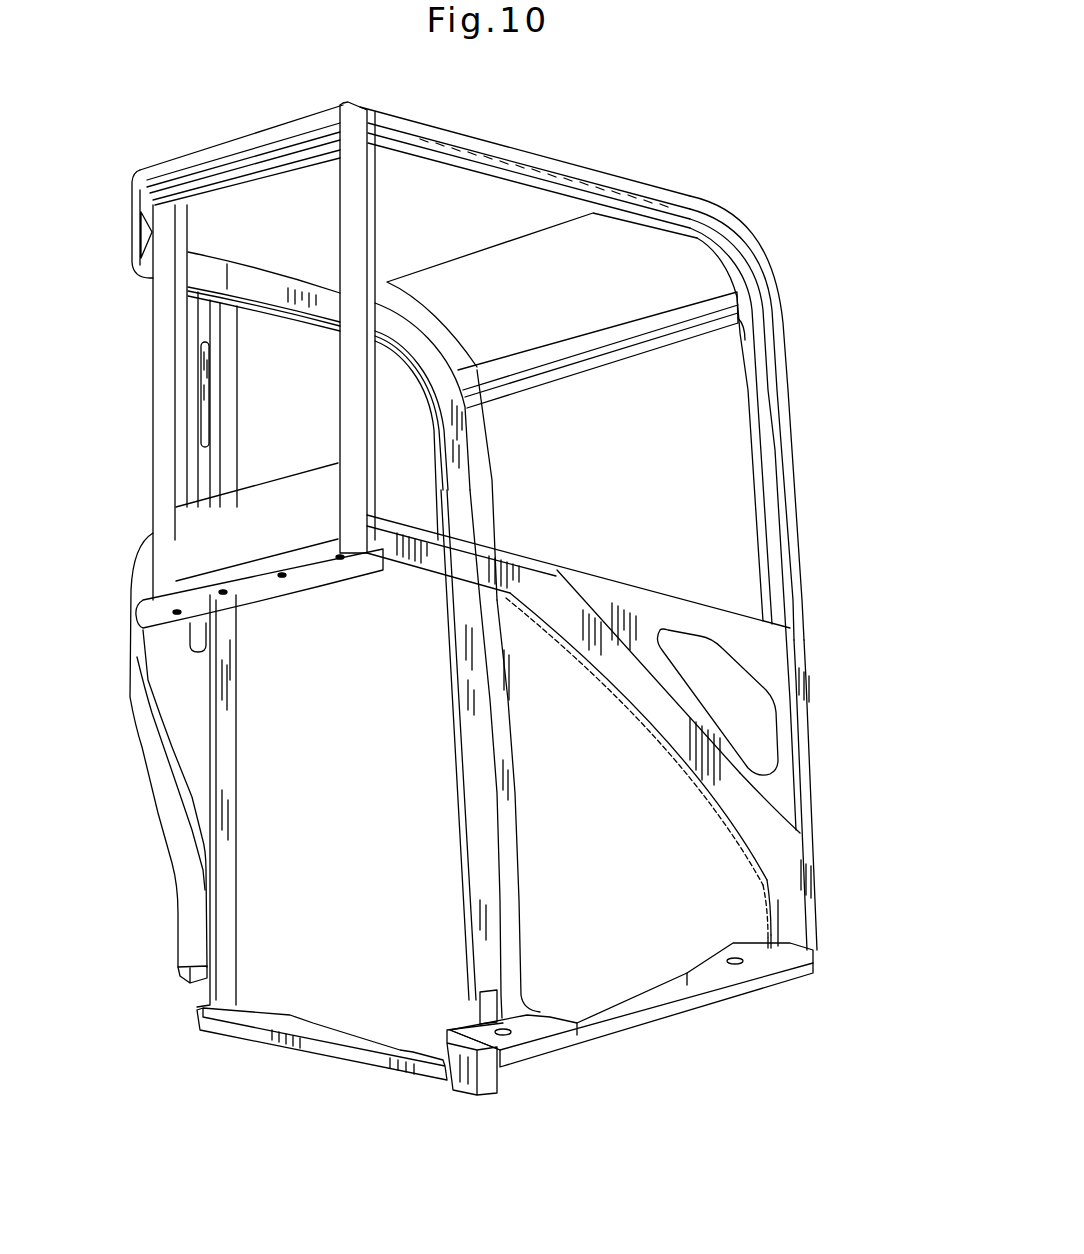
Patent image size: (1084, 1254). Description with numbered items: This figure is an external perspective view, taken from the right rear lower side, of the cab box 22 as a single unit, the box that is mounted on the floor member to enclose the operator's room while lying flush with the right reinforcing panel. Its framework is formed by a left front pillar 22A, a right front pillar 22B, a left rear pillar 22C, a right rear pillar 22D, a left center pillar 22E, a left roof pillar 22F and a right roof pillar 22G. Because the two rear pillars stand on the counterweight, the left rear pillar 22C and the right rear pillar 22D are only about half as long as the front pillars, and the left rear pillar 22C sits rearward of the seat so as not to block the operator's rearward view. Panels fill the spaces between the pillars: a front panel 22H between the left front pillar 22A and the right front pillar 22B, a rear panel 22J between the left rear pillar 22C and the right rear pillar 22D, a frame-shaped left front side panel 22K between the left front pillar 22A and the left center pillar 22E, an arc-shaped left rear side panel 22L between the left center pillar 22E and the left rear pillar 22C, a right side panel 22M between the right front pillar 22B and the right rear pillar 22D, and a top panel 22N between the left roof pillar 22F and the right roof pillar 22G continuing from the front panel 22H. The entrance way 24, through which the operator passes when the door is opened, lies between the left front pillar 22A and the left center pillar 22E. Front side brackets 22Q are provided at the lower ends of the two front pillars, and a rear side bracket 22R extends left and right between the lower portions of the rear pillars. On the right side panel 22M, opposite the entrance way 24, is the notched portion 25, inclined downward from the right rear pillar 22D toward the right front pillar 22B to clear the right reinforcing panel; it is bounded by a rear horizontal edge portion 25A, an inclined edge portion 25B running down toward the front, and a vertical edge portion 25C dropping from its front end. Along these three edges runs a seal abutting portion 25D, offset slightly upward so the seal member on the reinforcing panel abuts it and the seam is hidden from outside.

The cab box 22 is at (591, 169).
The top panel 22N is at (277, 133).
The right roof pillar 22G is at (511, 152).
The right front pillar 22B is at (785, 464).
The right side panel 22M is at (770, 653).
The left rear pillar 22C is at (160, 363).
The left roof pillar 22F is at (272, 298).
The right rear pillar 22D is at (347, 393).
The left front pillar 22A is at (457, 484).
The rear panel 22J is at (207, 537).
The rear side bracket 22R is at (268, 587).
The horizontal edge portion 25A is at (430, 570).
The notched portion 25 is at (670, 750).
The inclined edge portion 25B is at (620, 693).
The seal abutting portion 25D is at (707, 793).
The vertical edge portion 25C is at (767, 900).
The left front side panel 22K is at (448, 700).
The front panel 22H is at (508, 793).
The left center pillar 22E is at (225, 747).
The left rear side panel 22L is at (159, 802).
The entrance way 24 is at (311, 915).
The front side bracket 22Q is at (760, 960).